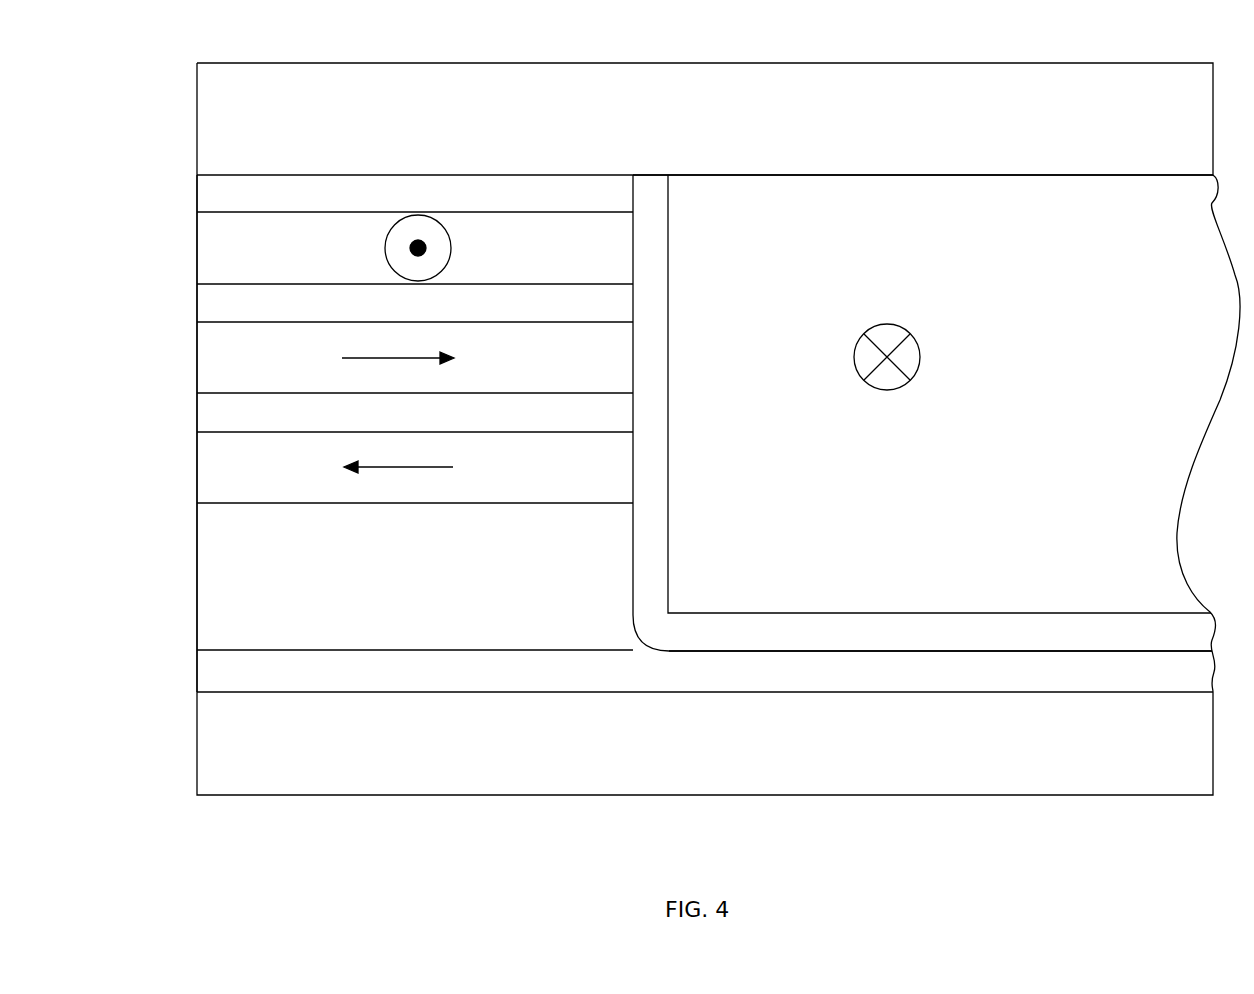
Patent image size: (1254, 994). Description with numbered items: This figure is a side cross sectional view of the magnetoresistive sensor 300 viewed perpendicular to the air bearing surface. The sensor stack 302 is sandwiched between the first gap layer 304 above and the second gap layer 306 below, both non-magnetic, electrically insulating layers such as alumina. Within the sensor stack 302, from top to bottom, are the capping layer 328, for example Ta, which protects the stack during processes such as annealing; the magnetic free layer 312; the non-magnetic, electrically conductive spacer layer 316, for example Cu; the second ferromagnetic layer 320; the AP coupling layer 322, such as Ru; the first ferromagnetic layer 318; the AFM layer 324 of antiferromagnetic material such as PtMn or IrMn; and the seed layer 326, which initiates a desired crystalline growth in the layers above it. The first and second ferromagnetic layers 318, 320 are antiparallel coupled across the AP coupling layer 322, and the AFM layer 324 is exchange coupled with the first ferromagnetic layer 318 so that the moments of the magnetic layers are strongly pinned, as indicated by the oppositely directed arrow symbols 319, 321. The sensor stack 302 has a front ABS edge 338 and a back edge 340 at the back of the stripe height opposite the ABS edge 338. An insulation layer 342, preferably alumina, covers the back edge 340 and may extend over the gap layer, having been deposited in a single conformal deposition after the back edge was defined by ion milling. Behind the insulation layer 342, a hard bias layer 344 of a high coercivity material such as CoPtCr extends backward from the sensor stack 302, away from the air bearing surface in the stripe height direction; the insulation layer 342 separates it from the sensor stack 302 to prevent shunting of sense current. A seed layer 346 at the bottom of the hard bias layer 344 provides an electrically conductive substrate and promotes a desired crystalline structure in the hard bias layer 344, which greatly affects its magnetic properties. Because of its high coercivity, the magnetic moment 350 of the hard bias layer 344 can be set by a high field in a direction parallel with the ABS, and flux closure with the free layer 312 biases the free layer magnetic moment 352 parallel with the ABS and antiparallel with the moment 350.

The magnetoresistive sensor 300 is at (1041, 43).
The sensor stack 302 is at (636, 298).
The first gap layer 304 is at (478, 120).
The second gap layer 306 is at (312, 745).
The free layer 312 is at (478, 242).
The spacer layer 316 is at (478, 299).
The first ferromagnetic layer 318 is at (478, 464).
The magnetic moment symbol 319 is at (407, 467).
The second ferromagnetic layer 320 is at (478, 355).
The magnetic moment symbol 321 is at (381, 358).
The AP coupling layer 322 is at (478, 409).
The AFM layer 324 is at (467, 573).
The seed layer 326 is at (312, 667).
The capping layer 328 is at (478, 192).
The ABS edge 338 is at (197, 340).
The back edge 340 is at (633, 405).
The insulation layer 342 is at (653, 513).
The hard bias layer 344 is at (860, 495).
The seed layer 346 is at (918, 637).
The magnetic moment 350 is at (920, 357).
The magnetic moment 352 is at (385, 248).